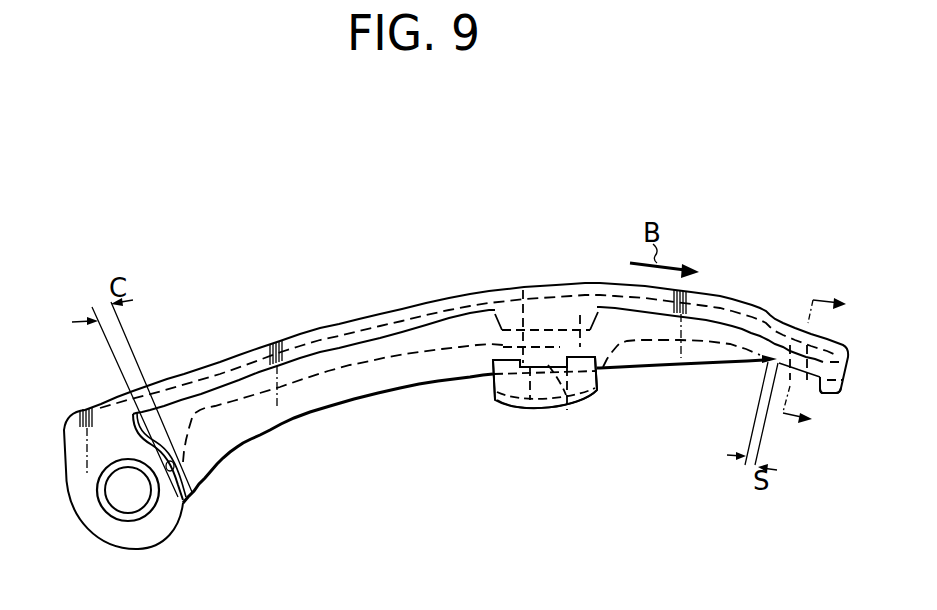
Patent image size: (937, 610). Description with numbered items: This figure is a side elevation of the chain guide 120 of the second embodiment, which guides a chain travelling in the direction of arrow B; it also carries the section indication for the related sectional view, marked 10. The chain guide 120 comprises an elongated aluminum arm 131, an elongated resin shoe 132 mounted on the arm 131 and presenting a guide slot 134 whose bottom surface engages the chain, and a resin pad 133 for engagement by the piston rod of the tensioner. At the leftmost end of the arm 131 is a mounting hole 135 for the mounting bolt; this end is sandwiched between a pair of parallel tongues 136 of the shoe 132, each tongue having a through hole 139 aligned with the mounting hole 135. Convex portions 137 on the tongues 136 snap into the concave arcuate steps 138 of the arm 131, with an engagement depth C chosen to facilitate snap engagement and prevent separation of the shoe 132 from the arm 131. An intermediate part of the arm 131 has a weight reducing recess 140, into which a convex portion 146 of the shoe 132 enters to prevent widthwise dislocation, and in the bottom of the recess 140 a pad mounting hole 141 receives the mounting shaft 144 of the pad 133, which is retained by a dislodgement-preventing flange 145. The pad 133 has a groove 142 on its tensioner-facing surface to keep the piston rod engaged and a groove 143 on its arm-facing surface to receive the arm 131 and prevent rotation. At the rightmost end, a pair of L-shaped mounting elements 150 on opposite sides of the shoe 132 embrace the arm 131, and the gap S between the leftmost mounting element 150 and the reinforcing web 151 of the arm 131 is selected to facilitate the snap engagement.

The chain guide 120 is at (455, 367).
The arm 131 is at (348, 406).
The shoe 132 is at (322, 328).
The pad 133 is at (495, 401).
The guide slot 134 is at (397, 318).
The mounting hole 135 is at (122, 503).
The tongues 136 is at (69, 488).
The convex portions 137 is at (187, 481).
The steps 138 is at (173, 466).
The through hole 139 is at (107, 509).
The weight reducing recess 140 is at (585, 328).
The pad mounting hole 141 is at (598, 385).
The groove 142 is at (567, 410).
The groove 143 is at (490, 379).
The mounting shaft 144 is at (528, 410).
The dislodgement-preventing flange 145 is at (491, 373).
The convex portion 146 is at (523, 290).
The L-shaped mounting elements 150 is at (812, 393).
The reinforcing web 151 is at (686, 363).
The section line 10- 10 is at (806, 356).